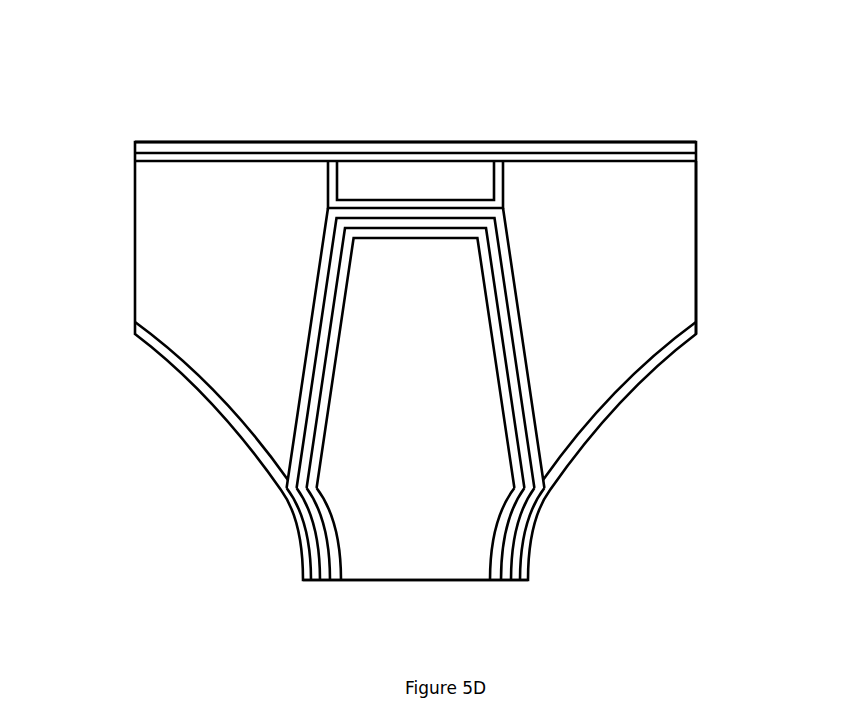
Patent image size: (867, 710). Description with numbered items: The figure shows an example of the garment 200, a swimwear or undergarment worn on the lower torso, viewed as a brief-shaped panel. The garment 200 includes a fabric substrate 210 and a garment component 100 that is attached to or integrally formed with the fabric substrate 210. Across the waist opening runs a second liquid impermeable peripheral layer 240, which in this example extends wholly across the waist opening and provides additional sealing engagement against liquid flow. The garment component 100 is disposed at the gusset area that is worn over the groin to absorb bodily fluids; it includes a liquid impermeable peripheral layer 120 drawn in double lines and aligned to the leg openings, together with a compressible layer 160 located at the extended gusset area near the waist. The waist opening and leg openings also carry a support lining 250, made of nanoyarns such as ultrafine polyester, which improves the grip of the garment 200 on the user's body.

The garment 200 is at (172, 117).
The support lining 250 is at (650, 143).
The second liquid impermeable peripheral layer 240 is at (665, 160).
The fabric substrate 210 is at (652, 286).
The compressible layer 160 is at (352, 178).
The garment component 100 is at (392, 365).
The liquid impermeable peripheral layer 120 is at (525, 420).